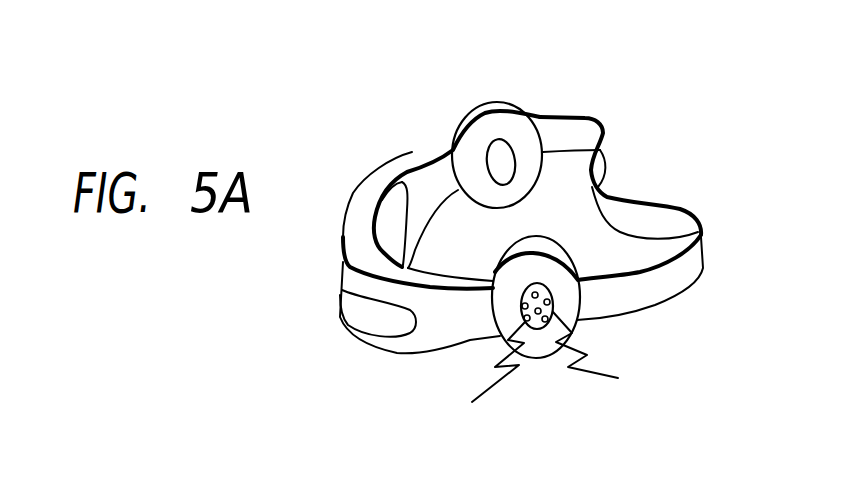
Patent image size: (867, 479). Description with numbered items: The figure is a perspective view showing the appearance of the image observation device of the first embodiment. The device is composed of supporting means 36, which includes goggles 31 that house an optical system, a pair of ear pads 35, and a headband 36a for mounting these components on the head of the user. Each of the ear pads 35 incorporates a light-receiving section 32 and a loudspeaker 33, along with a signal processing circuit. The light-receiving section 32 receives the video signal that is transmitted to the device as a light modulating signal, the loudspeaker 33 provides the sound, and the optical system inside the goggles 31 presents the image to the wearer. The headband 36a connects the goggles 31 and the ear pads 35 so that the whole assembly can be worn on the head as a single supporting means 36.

The goggles 31 is at (455, 244).
The light-receiving section 32 is at (553, 310).
The loudspeaker 33 is at (495, 162).
The ear pads 35 is at (500, 125).
The supporting means 36 is at (412, 158).
The headband 36a is at (568, 128).